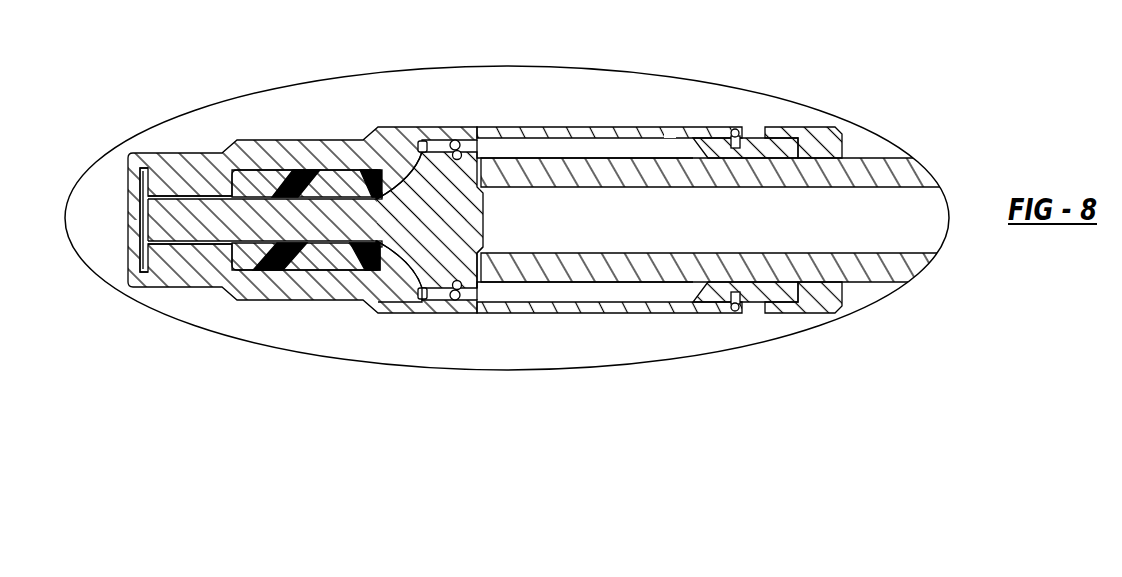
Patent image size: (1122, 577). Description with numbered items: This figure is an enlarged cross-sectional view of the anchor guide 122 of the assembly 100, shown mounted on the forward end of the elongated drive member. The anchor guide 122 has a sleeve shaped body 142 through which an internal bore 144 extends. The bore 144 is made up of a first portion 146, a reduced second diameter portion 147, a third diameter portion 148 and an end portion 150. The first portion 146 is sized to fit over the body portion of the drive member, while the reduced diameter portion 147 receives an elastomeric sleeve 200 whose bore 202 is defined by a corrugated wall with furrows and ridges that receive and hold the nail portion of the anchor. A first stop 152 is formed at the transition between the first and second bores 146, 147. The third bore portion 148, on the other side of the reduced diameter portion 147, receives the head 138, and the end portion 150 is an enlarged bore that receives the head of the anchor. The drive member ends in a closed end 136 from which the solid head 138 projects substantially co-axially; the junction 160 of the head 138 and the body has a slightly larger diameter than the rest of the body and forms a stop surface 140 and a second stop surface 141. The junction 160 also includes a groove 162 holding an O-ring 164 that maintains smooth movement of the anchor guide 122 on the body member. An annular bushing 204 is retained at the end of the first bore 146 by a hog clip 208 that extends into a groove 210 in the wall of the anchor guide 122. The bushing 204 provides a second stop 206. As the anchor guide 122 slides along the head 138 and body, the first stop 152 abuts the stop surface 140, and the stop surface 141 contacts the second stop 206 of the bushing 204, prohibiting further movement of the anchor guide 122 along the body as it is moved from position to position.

The connector assembly 100 is at (861, 4).
The anchor guide 122 is at (500, 88).
The closed end 136 is at (478, 215).
The head 138 is at (218, 229).
The stop surface 140 is at (418, 298).
The second stop surface 141 is at (486, 283).
The sleeve shaped body 142 is at (556, 130).
The internal bore 144 is at (611, 142).
The first portion 146 is at (668, 140).
The second diameter portion 147 is at (335, 168).
The third diameter portion 148 is at (196, 197).
The end portion 150 is at (140, 173).
The first stop 152 is at (426, 300).
The junction 160 is at (469, 255).
The groove 162 is at (448, 299).
The O-ring 164 is at (453, 141).
The elastomeric sleeve 200 is at (300, 264).
The bore 202 is at (253, 203).
The annular bushing 204 is at (818, 293).
The second stop 206 is at (682, 292).
The hog clip 208 is at (737, 306).
The groove 210 is at (737, 130).